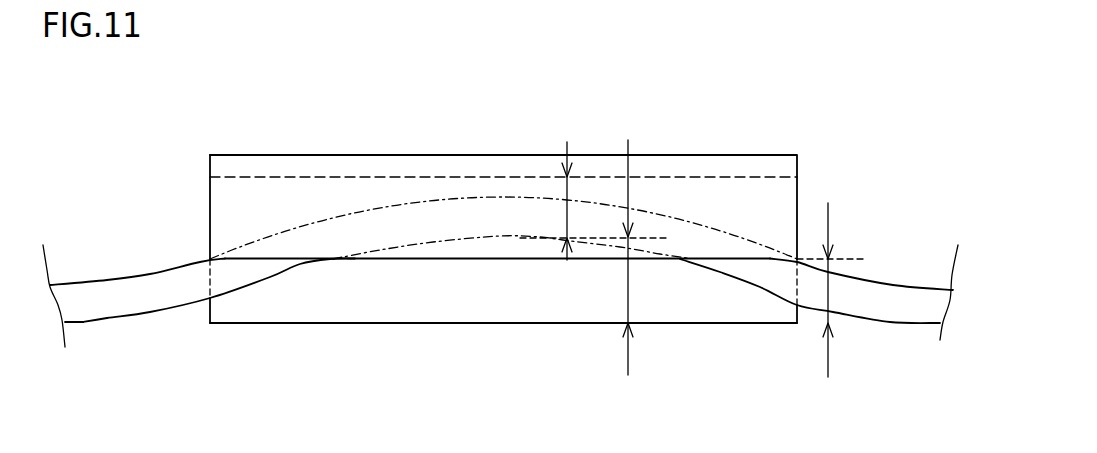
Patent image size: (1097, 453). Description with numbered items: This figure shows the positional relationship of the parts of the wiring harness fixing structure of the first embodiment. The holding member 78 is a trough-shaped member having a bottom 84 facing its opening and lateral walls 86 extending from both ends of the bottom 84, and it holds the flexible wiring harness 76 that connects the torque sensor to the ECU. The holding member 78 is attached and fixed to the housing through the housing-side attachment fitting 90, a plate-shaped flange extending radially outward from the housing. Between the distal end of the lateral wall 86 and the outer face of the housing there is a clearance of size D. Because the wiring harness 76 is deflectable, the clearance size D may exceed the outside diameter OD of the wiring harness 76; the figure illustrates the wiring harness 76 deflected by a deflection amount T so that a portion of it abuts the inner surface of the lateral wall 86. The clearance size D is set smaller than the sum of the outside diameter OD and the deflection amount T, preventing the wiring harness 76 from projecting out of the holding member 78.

The holding member 78 is at (712, 155).
The lateral wall 86 is at (230, 211).
The housing-side attachment fitting 90 is at (318, 307).
The bottom 84 is at (480, 168).
The wiring harness 76 is at (768, 275).
The outside diameter OD is at (593, 184).
The deflection amount T is at (631, 243).
The size of the clearance D is at (832, 307).